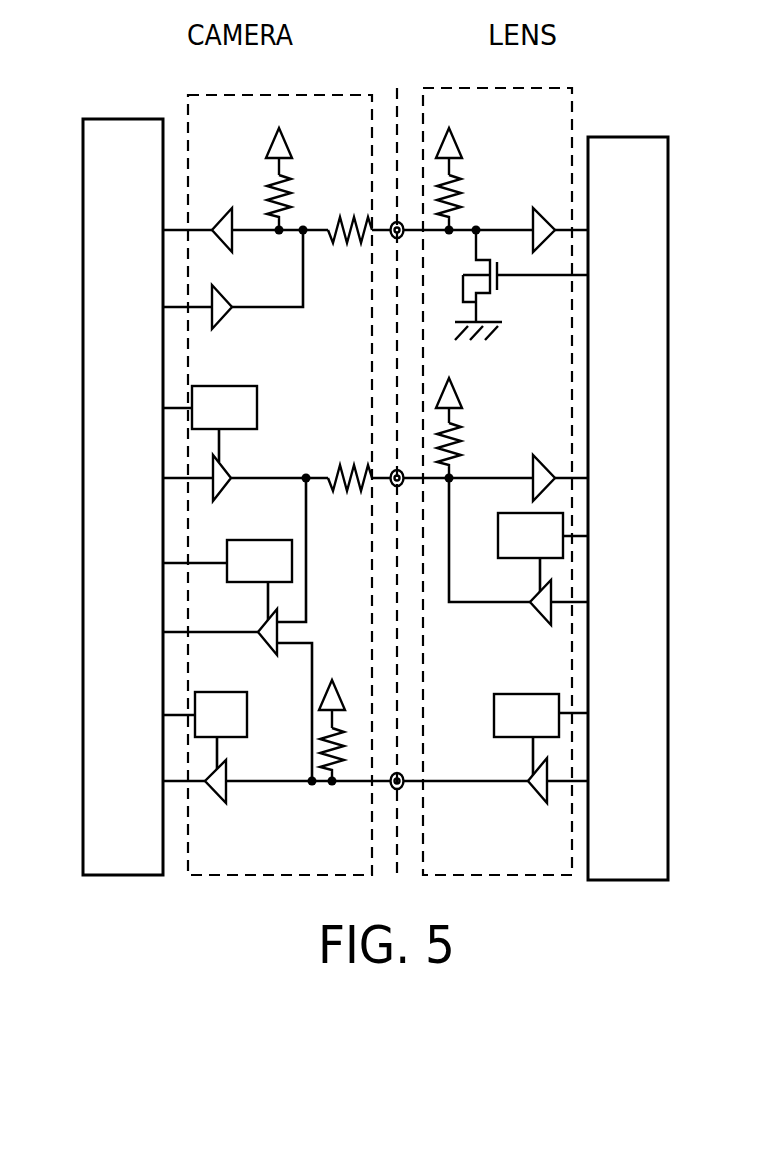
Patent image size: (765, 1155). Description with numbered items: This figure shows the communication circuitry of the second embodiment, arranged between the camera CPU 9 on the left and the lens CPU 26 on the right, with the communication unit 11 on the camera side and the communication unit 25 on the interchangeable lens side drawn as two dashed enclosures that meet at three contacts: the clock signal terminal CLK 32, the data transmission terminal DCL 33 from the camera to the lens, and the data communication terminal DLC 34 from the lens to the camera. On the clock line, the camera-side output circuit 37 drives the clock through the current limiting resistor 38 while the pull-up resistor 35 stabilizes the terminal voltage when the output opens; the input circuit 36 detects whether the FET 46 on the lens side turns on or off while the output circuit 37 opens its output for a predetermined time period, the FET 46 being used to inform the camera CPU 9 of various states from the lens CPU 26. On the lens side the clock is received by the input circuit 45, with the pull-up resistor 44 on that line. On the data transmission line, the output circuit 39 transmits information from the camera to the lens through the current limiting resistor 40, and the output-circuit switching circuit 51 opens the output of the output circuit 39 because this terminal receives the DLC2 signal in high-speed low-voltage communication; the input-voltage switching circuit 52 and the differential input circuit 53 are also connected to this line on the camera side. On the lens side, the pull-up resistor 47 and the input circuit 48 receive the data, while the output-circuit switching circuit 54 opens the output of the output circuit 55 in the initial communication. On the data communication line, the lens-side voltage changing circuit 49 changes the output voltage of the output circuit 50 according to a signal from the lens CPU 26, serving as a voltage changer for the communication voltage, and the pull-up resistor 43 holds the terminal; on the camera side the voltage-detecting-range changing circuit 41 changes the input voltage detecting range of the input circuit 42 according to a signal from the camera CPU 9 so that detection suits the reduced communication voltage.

The camera CPU 9 is at (120, 119).
The communication unit on the camera side 11 is at (318, 96).
The communication unit on the interchangeable lens side 25 is at (447, 88).
The lens CPU 26 is at (622, 137).
The clock signal terminal CLK 32 is at (392, 224).
The data transmission terminal DCL 33 is at (392, 470).
The data communication terminal DLC 34 is at (392, 775).
The pull-up resistor 35 is at (286, 192).
The input circuit 36 is at (215, 219).
The output circuit 37 is at (222, 300).
The current limiting resistor 38 is at (345, 248).
The output circuit 39 is at (219, 462).
The current limiting resistor 40 is at (347, 466).
The voltage-detecting-range changing circuit 41 is at (247, 725).
The input circuit 42 is at (216, 797).
The pull-up resistor 43 is at (336, 773).
The pull-up resistor 44 is at (456, 182).
The input circuit 45 is at (546, 215).
The FET 46 is at (491, 286).
The pull-up resistor 47 is at (455, 412).
The input circuit 48 is at (538, 455).
The voltage changing circuit 49 is at (494, 702).
The output circuit 50 is at (540, 802).
The output-circuit switching circuit 51 is at (250, 386).
The input-voltage switching circuit 52 is at (252, 540).
The differential input circuit 53 is at (262, 630).
The output-circuit switching circuit 54 is at (498, 551).
The output circuit 55 is at (540, 612).